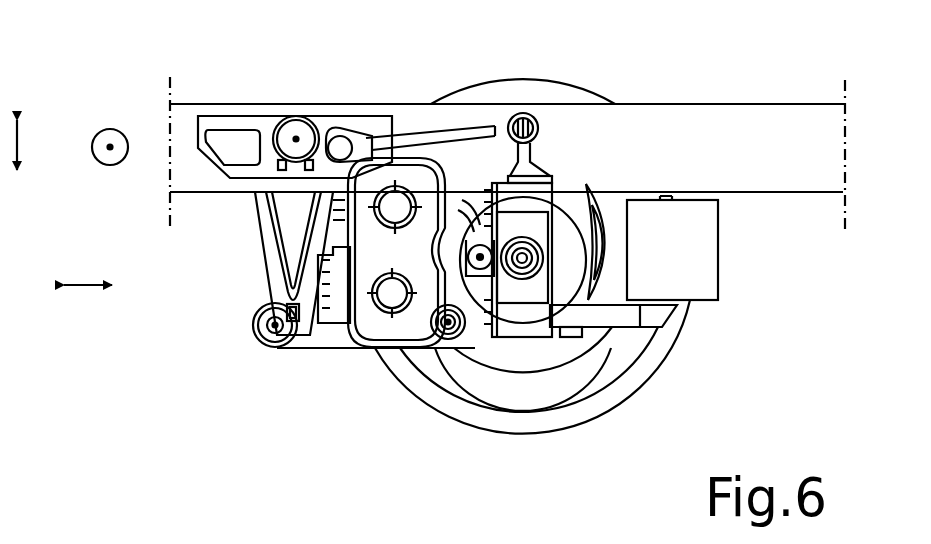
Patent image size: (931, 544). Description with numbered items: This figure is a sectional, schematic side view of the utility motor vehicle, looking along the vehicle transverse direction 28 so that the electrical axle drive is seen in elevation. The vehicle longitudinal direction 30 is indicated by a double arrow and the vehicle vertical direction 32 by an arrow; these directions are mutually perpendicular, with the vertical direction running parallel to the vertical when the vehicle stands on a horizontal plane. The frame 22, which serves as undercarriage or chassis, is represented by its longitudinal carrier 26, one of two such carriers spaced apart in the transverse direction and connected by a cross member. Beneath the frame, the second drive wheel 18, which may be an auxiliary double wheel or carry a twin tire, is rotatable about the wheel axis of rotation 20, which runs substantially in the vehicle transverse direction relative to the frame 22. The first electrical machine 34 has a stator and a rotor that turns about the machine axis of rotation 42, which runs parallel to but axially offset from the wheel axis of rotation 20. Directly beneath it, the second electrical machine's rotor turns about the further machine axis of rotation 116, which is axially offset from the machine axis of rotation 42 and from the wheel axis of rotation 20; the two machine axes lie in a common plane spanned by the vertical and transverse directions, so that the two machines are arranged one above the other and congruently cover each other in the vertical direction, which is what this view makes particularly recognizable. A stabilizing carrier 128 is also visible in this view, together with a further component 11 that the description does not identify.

The wheel drive module 11 is at (360, 326).
The second drive wheel 18 is at (614, 409).
The wheel axis of rotation 20 is at (523, 257).
The frame 22 is at (802, 118).
The longitudinal carrier 26 is at (833, 155).
The vehicle transverse direction 28 is at (114, 129).
The vehicle longitudinal direction 30 is at (88, 283).
The vehicle vertical direction 32 is at (20, 145).
The first electrical machine 34 is at (410, 203).
The machine axis of rotation 42 is at (436, 243).
The further machine axis of rotation 116 is at (388, 310).
The stabilizing carrier 128 is at (447, 337).